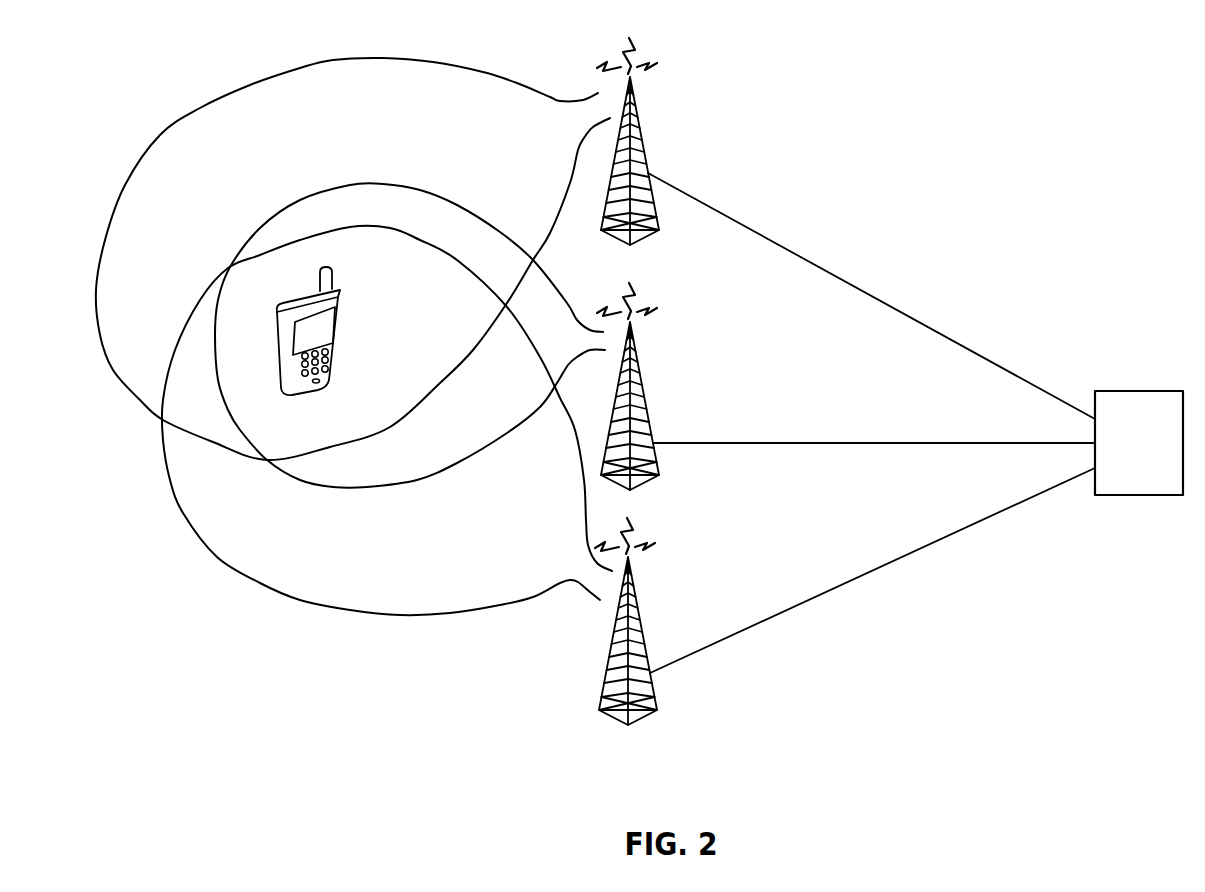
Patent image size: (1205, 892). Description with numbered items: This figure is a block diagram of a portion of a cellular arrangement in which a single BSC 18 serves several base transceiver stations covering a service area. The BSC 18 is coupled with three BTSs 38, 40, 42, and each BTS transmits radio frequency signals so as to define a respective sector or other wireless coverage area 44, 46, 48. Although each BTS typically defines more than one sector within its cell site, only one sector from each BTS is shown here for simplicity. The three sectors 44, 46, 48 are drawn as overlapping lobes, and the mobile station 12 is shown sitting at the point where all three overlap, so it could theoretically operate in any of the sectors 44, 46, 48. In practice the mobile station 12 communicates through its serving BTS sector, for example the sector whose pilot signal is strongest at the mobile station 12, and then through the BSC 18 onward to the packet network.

The mobile station 12 is at (342, 323).
The BSC 18 is at (1139, 391).
The BTS 38 is at (641, 130).
The BTS 40 is at (641, 375).
The BTS 42 is at (641, 610).
The sector 44 is at (325, 62).
The sector 46 is at (458, 205).
The sector 48 is at (360, 612).